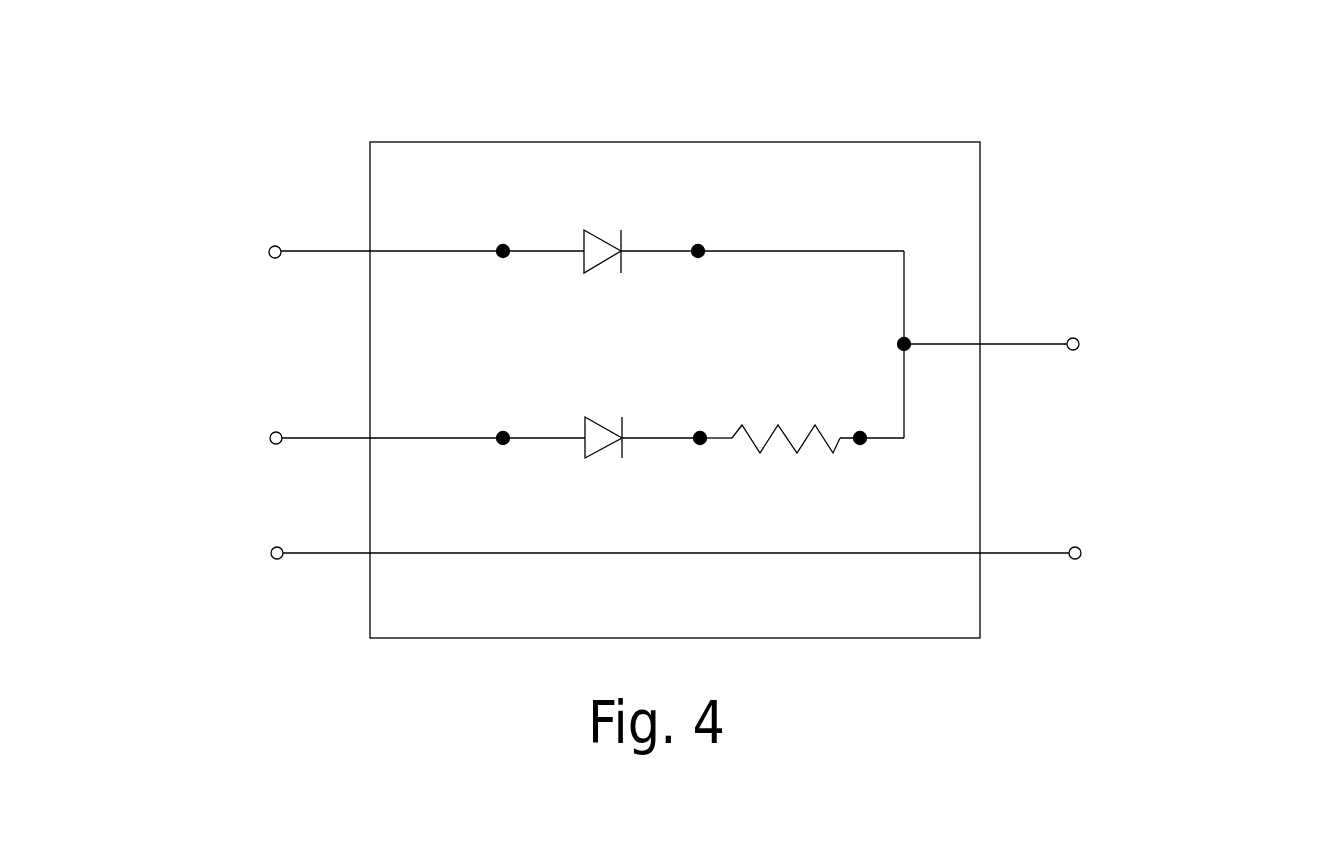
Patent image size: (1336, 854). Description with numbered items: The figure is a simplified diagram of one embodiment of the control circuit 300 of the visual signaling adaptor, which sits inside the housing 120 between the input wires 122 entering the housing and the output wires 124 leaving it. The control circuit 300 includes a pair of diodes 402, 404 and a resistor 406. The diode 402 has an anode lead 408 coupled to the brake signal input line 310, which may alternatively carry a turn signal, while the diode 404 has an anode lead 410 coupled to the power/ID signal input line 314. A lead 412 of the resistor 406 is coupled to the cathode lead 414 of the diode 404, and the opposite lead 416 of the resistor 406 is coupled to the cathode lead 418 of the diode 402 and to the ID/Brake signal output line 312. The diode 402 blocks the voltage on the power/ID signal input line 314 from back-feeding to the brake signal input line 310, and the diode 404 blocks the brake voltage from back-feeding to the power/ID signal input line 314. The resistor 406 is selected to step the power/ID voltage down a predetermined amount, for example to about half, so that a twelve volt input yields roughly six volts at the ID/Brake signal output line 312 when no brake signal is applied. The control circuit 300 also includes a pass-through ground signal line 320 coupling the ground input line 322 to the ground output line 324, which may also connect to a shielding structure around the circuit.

The housing 120 is at (933, 142).
The input wires 122 is at (220, 118).
The output wires 124 is at (1100, 137).
The control circuit 300 is at (848, 183).
The brake signal input line 310 is at (316, 251).
The ID/Brake signal output line 312 is at (1025, 344).
The power/ID signal input line 314 is at (318, 438).
The ground signal line 320 is at (720, 554).
The ground input line 322 is at (319, 553).
The ground output line 324 is at (1027, 553).
The diode 402 is at (607, 241).
The diode 404 is at (608, 427).
The resistor 406 is at (787, 427).
The anode lead 408 is at (552, 251).
The anode lead 410 is at (432, 438).
The lead 412 is at (718, 439).
The cathode lead 414 is at (668, 439).
The opposite lead 416 is at (885, 439).
The cathode lead 418 is at (660, 251).